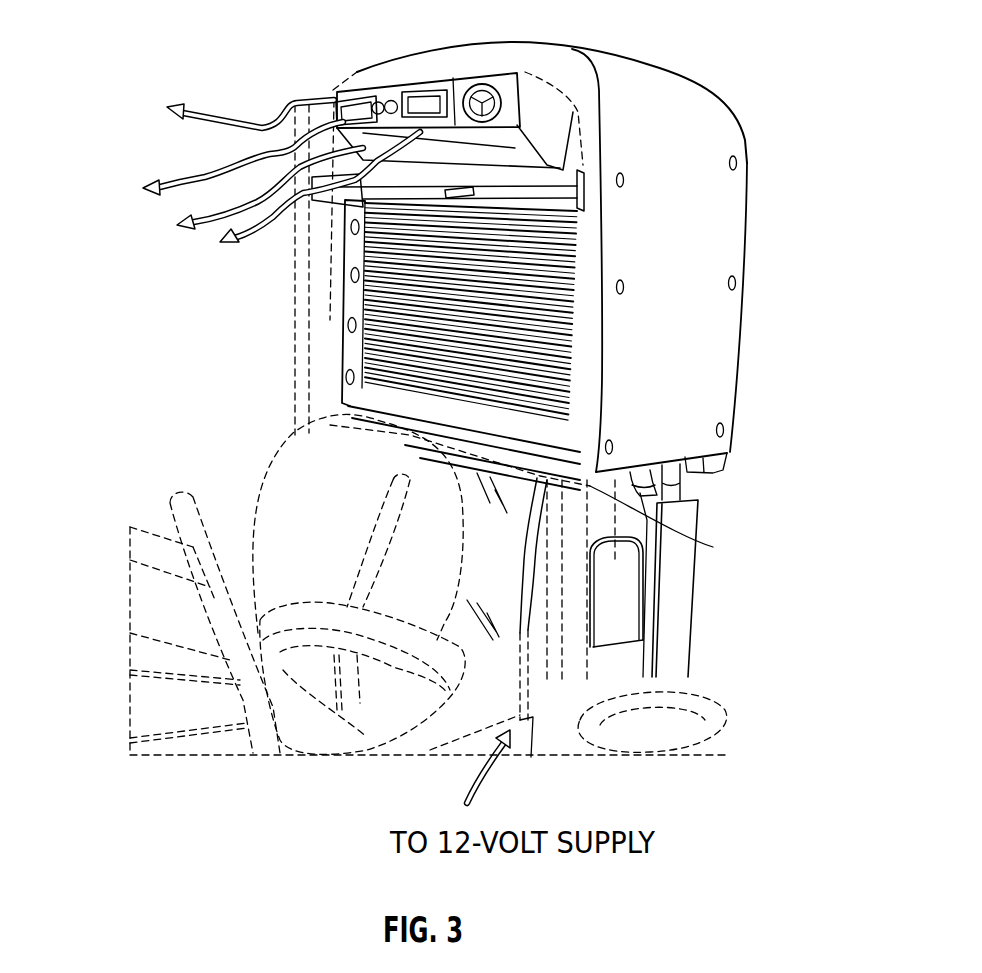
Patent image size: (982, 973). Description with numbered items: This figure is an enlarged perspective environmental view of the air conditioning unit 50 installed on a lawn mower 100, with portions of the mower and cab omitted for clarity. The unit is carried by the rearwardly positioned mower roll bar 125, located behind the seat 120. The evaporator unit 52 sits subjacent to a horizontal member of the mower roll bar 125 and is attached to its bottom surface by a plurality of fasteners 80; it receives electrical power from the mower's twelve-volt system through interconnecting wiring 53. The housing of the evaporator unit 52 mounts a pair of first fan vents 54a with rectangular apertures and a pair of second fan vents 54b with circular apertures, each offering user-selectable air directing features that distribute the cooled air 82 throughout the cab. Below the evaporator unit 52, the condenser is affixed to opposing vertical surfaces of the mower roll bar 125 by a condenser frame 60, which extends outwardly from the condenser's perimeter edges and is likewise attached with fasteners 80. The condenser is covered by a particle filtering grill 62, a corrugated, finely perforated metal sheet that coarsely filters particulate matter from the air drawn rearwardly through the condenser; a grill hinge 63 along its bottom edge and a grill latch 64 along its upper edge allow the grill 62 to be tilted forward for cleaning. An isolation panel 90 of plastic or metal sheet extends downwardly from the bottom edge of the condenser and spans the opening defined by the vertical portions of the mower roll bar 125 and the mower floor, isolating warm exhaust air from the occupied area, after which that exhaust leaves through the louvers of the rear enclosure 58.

The air conditioning unit 50 is at (667, 62).
The evaporator unit 52 is at (410, 84).
The interconnecting wiring 53 is at (525, 618).
The first fan vents 54a is at (433, 90).
The second fan vents 54b is at (490, 82).
The rear enclosure 58 is at (727, 148).
The condenser frame 60 is at (350, 208).
The particle filtering grill 62 is at (348, 326).
The grill hinge 63 is at (630, 480).
The grill latch 64 is at (462, 189).
The fasteners 80 is at (720, 422).
The cooled air 82 is at (267, 117).
The isolation panel 90 is at (500, 549).
The lawn mower 100 is at (153, 697).
The seat 120 is at (312, 548).
The mower roll bar 125 is at (597, 270).